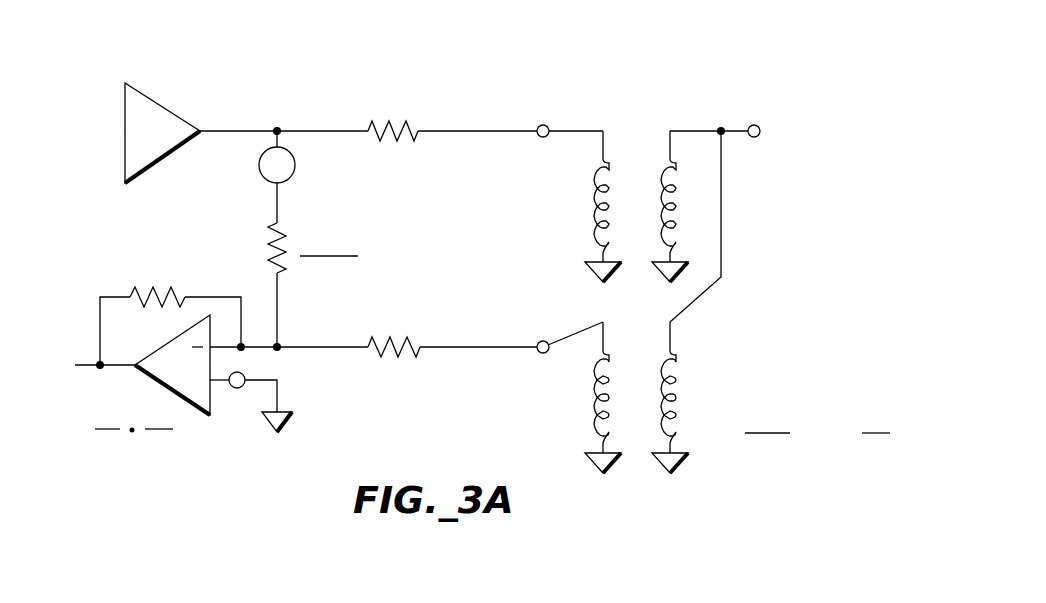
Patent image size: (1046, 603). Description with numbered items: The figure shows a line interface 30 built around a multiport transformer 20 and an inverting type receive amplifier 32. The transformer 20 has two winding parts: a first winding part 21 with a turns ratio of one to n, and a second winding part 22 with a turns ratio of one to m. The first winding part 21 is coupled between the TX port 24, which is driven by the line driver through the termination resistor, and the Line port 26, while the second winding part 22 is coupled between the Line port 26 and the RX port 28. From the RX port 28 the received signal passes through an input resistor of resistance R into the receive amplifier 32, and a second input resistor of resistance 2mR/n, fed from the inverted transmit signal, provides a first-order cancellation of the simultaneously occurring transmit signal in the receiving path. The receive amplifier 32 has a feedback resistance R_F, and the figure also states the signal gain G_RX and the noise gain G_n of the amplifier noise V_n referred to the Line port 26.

The line interface 30 is at (485, 31).
The transformer 20 is at (658, 77).
The first winding part 21 is at (690, 205).
The second winding part 22 is at (690, 396).
The TX port 24 is at (546, 126).
The Line port 26 is at (759, 137).
The RX port 28 is at (540, 353).
The receive amplifier 32 is at (228, 442).